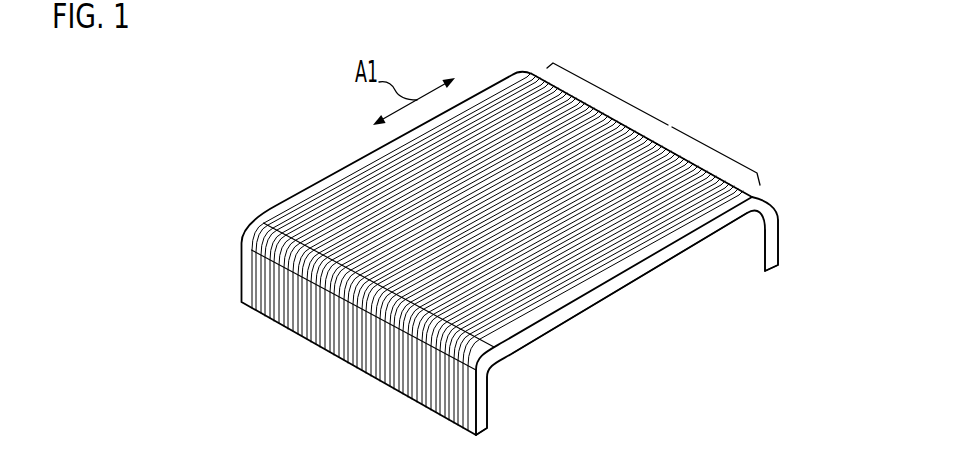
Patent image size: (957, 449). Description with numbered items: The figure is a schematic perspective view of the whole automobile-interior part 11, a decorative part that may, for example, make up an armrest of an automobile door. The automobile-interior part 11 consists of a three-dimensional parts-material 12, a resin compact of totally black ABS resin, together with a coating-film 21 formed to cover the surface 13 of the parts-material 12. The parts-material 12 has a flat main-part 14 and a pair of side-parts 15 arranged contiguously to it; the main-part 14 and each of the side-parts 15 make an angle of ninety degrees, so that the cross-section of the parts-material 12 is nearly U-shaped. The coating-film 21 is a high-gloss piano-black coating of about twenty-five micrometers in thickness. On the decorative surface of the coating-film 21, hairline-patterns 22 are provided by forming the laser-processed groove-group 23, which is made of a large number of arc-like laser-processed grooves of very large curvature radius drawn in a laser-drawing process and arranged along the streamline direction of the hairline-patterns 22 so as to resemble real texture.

The automobile-interior part 11 is at (782, 216).
The parts-material 12 is at (277, 206).
The surface 13 is at (356, 165).
The main-part 14 is at (528, 338).
The side-parts 15 is at (483, 407).
The coating-film 21 is at (627, 263).
The hairline-patterns 22 is at (698, 124).
The laser-processed groove-group 23 is at (668, 125).